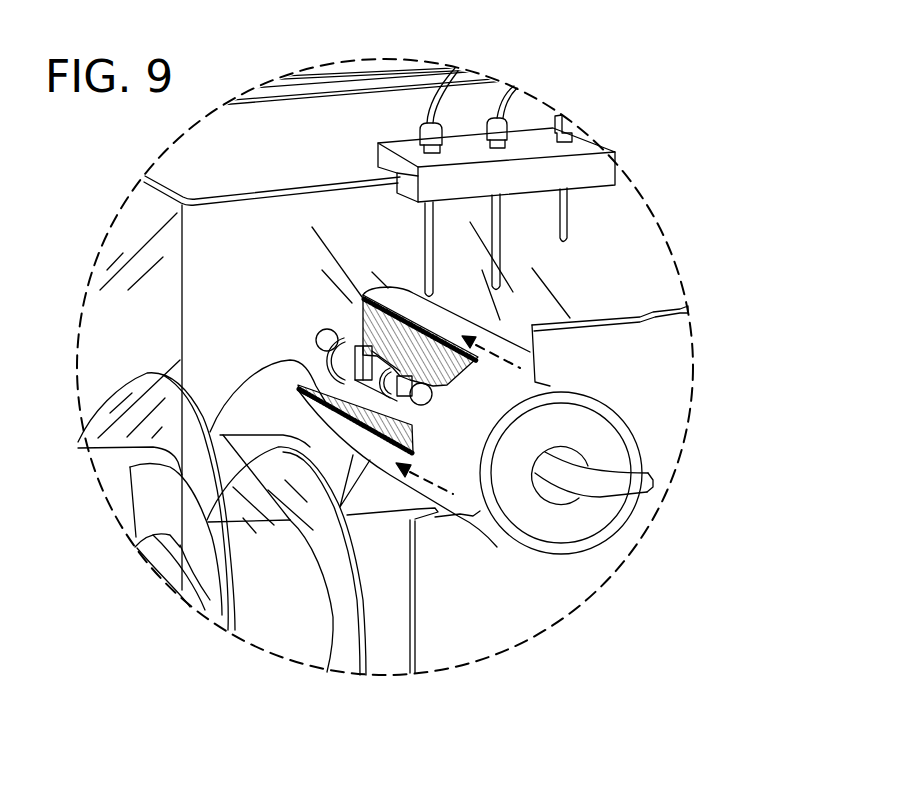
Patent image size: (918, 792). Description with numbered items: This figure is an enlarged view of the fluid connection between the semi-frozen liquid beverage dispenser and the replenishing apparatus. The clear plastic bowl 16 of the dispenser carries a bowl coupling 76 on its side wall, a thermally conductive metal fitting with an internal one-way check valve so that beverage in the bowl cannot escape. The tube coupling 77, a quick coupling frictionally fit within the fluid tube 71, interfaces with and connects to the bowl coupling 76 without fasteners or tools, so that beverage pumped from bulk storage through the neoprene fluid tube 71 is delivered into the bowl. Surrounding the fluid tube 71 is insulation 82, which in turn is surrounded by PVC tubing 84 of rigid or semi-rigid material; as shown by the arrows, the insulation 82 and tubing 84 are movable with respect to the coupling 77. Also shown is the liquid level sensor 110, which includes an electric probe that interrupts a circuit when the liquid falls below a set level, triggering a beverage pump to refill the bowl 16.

The clear plastic bowl 16 is at (262, 229).
The liquid level sensor 110 is at (628, 178).
The bowl coupling 76 is at (362, 340).
The tube coupling 77 is at (376, 374).
The insulation 82 is at (363, 392).
The fluid tube 71 is at (602, 482).
The PVC tubing 84 is at (520, 546).